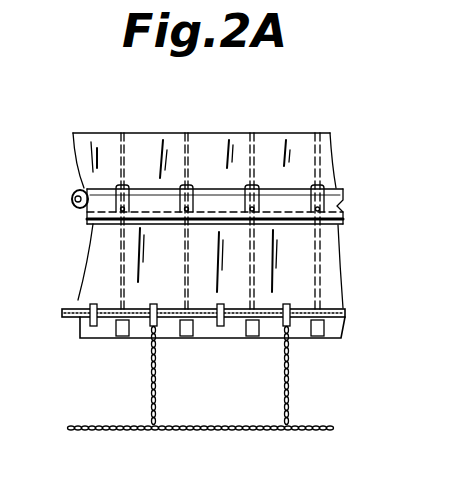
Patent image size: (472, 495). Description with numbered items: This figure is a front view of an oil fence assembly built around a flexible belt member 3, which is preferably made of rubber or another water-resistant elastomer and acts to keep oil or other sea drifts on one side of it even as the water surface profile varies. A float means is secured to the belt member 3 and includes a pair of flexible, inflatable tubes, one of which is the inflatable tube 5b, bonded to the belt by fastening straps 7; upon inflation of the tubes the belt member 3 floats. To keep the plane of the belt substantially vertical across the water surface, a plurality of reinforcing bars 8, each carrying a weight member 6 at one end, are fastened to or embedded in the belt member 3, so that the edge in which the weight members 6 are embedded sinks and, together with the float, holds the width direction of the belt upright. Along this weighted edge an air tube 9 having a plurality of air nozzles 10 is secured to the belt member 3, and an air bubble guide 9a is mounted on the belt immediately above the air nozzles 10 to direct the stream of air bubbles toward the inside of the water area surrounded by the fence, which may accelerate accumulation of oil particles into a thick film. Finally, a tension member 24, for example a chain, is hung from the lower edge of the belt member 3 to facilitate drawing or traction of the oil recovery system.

The belt member 3 is at (163, 138).
The inflatable tube 5b is at (72, 185).
The weight member 6 is at (120, 338).
The fastening strap 7 is at (336, 186).
The reinforcing bar 8 is at (256, 187).
The air tube 9 is at (341, 318).
The air bubble guide 9a is at (203, 192).
The air nozzle 10 is at (329, 312).
The tension member 24 is at (218, 432).